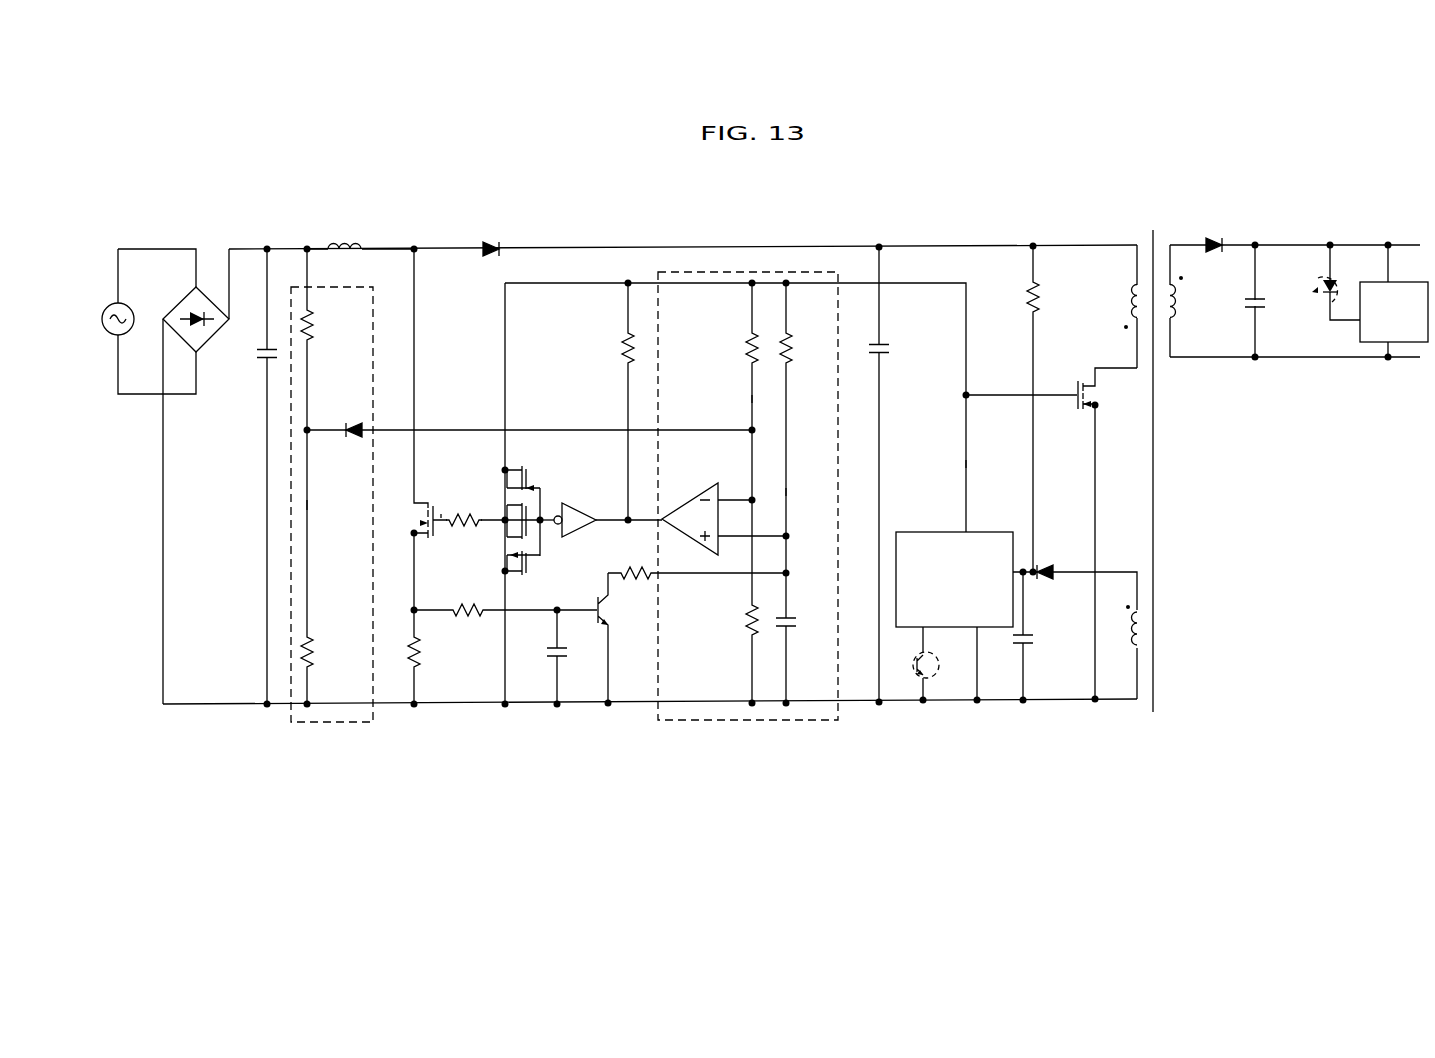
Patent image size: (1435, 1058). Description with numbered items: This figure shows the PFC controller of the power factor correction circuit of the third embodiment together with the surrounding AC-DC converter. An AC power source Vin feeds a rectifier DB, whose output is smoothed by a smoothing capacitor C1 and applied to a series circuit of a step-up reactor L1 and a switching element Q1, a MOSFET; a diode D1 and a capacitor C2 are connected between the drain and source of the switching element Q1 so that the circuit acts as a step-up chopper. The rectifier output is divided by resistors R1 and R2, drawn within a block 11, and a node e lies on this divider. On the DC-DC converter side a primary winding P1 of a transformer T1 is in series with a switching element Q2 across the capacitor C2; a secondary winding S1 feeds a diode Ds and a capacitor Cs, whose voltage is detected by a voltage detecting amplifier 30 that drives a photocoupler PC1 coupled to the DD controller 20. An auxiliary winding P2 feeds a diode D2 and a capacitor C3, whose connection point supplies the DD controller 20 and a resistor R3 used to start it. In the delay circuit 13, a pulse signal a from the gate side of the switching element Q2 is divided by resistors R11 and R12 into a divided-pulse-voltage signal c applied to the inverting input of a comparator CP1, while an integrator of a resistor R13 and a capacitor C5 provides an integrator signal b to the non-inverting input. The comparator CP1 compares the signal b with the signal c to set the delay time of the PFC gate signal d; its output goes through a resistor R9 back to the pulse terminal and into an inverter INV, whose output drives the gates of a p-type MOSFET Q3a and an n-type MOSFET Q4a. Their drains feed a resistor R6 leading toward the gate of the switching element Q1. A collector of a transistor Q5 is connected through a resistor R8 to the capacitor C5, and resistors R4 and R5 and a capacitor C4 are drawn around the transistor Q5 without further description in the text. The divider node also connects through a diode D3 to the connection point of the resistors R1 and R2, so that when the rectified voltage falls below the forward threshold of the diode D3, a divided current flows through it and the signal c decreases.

The AC power source Vin is at (149, 321).
The rectifier DB is at (214, 342).
The smoothing capacitor C1 is at (251, 477).
The step-up reactor L1 is at (385, 229).
The diode D1 is at (492, 236).
The voltage detection circuit 11 is at (337, 722).
The resistor R1 is at (321, 339).
The resistor R2 is at (321, 569).
The diode D3 is at (530, 415).
The node e is at (313, 503).
The switching element Q1 is at (413, 393).
The PFC gate signal d is at (441, 514).
The resistor R6 is at (475, 505).
The resistor R4 is at (431, 620).
The resistor R5 is at (505, 596).
The capacitor C4 is at (540, 657).
The transistor Q5 is at (620, 640).
The resistor R8 is at (699, 559).
The p-type MOSFET Q3a is at (497, 495).
The n-type MOSFET Q4a is at (500, 531).
The inverter INV is at (601, 506).
The resistor R9 is at (614, 400).
The comparator CP1 is at (726, 507).
The resistor R11 is at (732, 390).
The resistor R13 is at (807, 427).
The divided-pulse-voltage signal c is at (750, 401).
The integrator signal b is at (788, 493).
The resistor R12 is at (728, 603).
The capacitor C5 is at (802, 640).
The delay circuit 13 is at (735, 720).
The capacitor C2 is at (894, 475).
The pulse signal a is at (968, 466).
The DD controller 20 is at (937, 531).
The photocoupler PC1 is at (1145, 473).
The resistor R3 is at (1019, 409).
The diode D2 is at (1075, 587).
The capacitor C3 is at (1038, 638).
The switching element Q2 is at (1051, 525).
The primary winding P1 is at (1116, 306).
The auxiliary winding P2 is at (1118, 652).
The transformer T1 is at (1152, 456).
The secondary winding S1 is at (1295, 301).
The diode Ds is at (1216, 228).
The capacitor Cs is at (1268, 301).
The voltage detecting amplifier 30 is at (1375, 344).